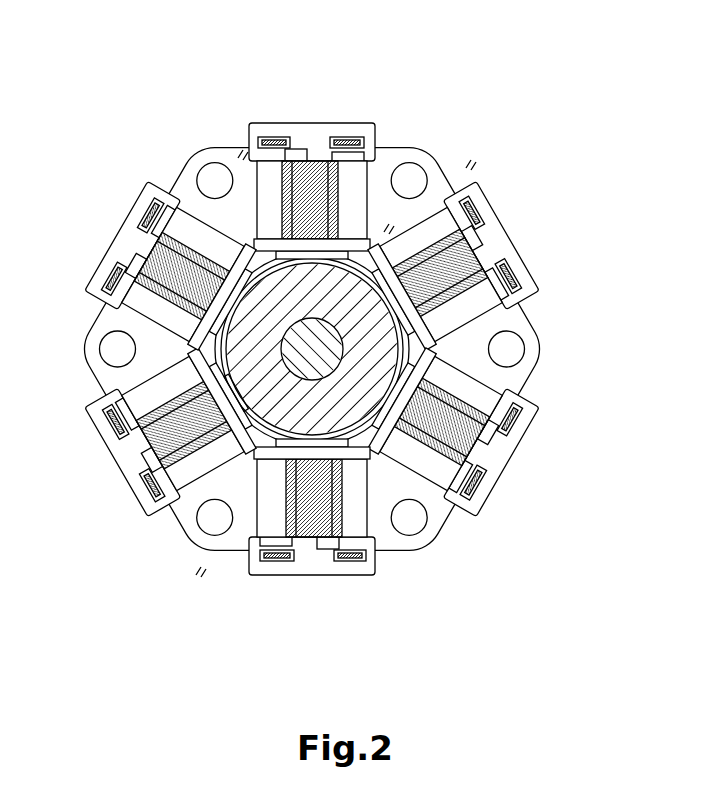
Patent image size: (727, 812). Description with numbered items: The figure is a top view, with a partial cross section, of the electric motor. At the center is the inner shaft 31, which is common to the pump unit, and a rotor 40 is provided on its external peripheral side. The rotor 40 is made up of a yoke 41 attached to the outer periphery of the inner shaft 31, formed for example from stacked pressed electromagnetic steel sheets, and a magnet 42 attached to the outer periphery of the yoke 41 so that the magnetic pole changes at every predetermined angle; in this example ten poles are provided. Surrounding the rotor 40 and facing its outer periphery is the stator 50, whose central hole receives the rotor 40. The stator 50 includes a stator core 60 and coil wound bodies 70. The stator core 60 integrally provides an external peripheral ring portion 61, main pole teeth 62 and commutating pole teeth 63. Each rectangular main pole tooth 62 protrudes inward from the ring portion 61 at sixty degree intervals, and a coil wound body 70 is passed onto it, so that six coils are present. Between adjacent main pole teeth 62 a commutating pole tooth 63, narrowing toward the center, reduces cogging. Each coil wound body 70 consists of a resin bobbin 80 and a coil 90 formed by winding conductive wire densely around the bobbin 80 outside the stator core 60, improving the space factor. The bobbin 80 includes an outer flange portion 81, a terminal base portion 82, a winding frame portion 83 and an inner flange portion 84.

The inner shaft 31 is at (180, 517).
The rotor 40 is at (382, 376).
The yoke 41 is at (380, 256).
The magnet 42 is at (372, 447).
The stator 50 is at (452, 164).
The stator core 60 is at (203, 547).
The external peripheral ring portion 61 is at (128, 280).
The main pole tooth 62 is at (312, 349).
The commutating pole tooth 63 is at (472, 333).
The coil wound body 70 is at (296, 333).
The bobbin 80 is at (213, 236).
The outer flange portion 81 is at (160, 237).
The terminal base portion 82 is at (312, 130).
The winding frame portion 83 is at (132, 258).
The inner flange portion 84 is at (311, 334).
The coil 90 is at (110, 303).